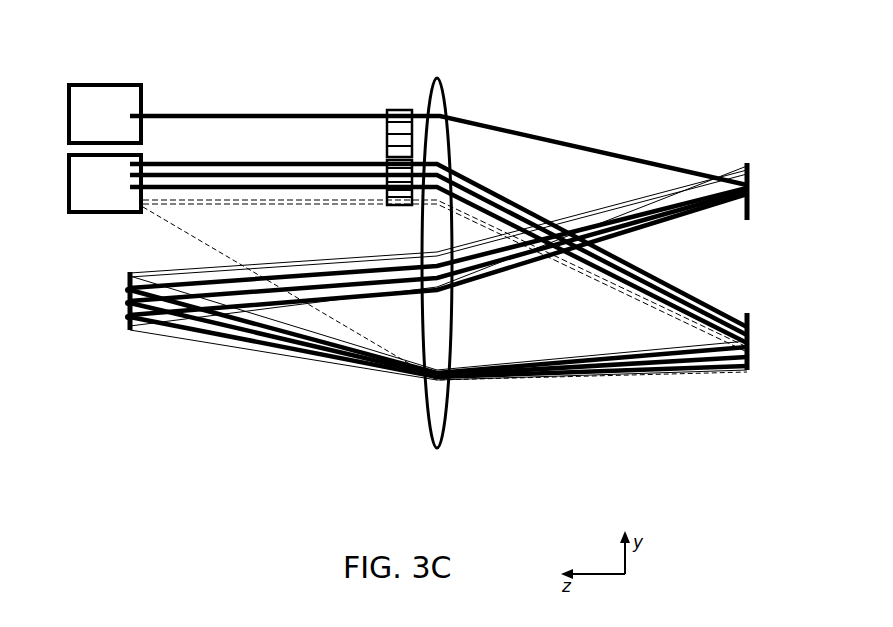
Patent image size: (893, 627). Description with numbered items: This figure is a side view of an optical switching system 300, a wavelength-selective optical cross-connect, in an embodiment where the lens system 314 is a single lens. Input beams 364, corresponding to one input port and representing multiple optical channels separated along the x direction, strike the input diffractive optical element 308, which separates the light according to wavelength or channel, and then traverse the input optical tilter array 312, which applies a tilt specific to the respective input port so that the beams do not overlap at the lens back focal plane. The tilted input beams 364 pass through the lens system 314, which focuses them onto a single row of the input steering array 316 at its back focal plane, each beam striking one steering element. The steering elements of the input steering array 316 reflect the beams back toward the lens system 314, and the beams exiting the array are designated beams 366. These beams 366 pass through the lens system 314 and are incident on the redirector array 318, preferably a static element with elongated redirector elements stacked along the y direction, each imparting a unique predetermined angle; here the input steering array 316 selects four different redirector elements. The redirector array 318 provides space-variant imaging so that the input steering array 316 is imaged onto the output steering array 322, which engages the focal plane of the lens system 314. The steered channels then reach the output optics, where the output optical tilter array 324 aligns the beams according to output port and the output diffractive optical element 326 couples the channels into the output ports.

The optical switching system 300 is at (130, 28).
The input diffractive optical element 308 is at (120, 83).
The input optical tilter array 312 is at (386, 112).
The lens system 314 is at (453, 258).
The input steering array 316 is at (767, 185).
The redirector array 318 is at (109, 312).
The output steering array 322 is at (767, 335).
The output optical tilter array 324 is at (388, 204).
The output diffractive optical element 326 is at (89, 206).
The input beams 364 is at (438, 138).
The beams exiting the input steering array 366 is at (655, 226).